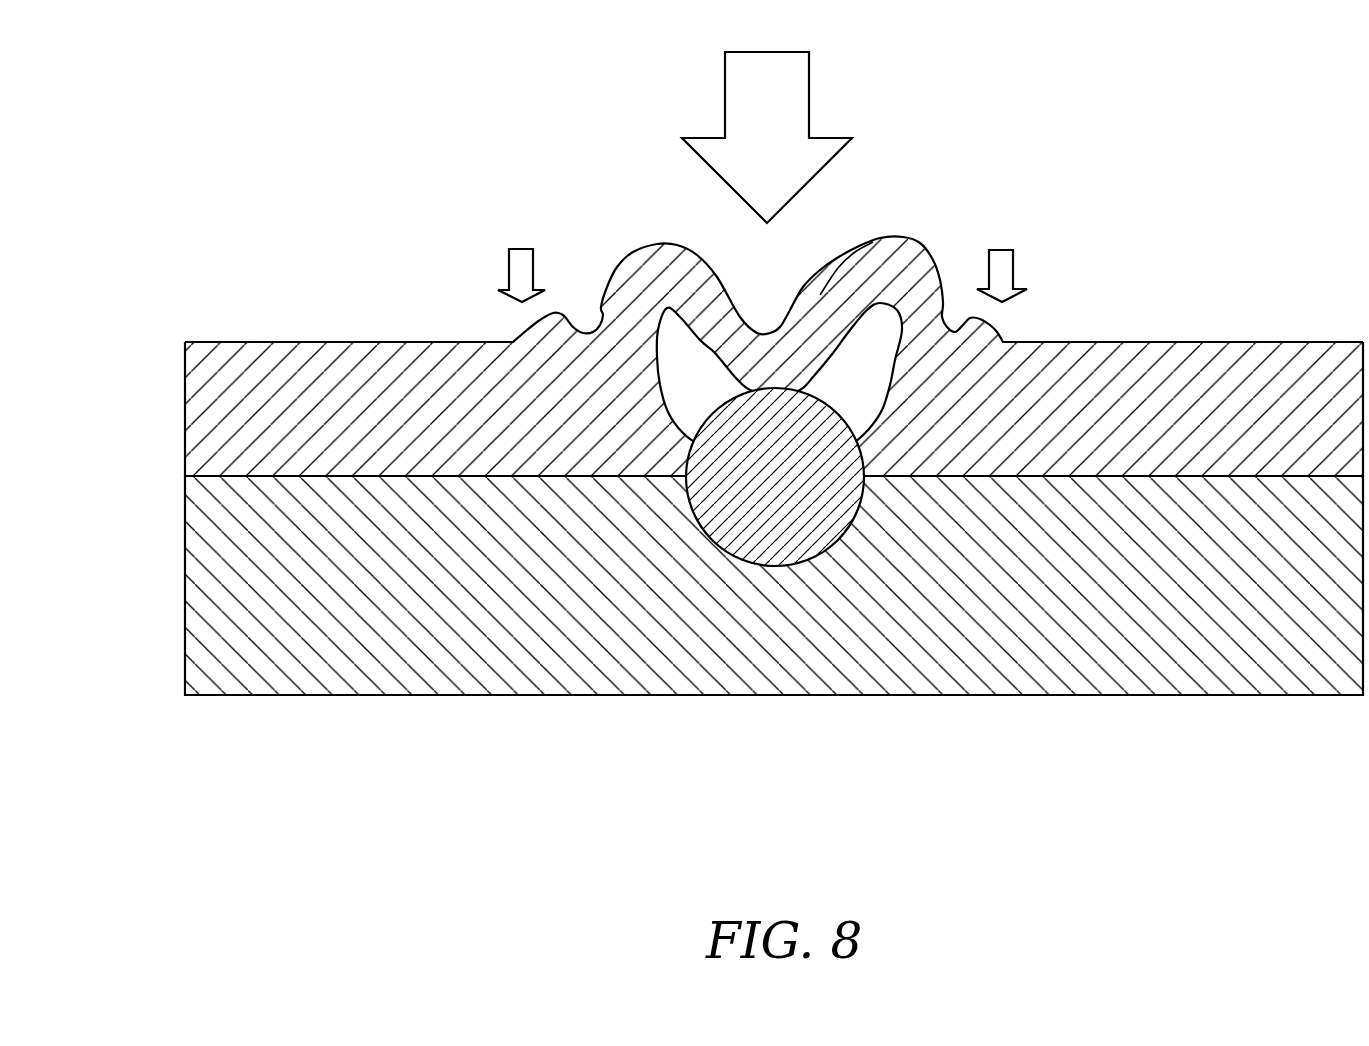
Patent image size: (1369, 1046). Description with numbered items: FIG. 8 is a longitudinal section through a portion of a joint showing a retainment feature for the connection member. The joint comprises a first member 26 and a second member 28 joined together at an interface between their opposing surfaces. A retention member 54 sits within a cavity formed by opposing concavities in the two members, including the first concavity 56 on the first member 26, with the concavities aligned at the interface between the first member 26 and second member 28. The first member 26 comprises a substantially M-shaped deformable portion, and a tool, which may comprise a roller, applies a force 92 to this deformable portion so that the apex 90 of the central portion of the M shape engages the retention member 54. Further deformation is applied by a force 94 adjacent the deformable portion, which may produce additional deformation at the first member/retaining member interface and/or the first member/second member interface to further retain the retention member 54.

The first member 26 is at (197, 398).
The second member 28 is at (222, 603).
The retention member 54 is at (788, 489).
The first concavity 56 is at (685, 355).
The apex 90 is at (777, 358).
The force 92 is at (787, 88).
The force 94 is at (509, 268).